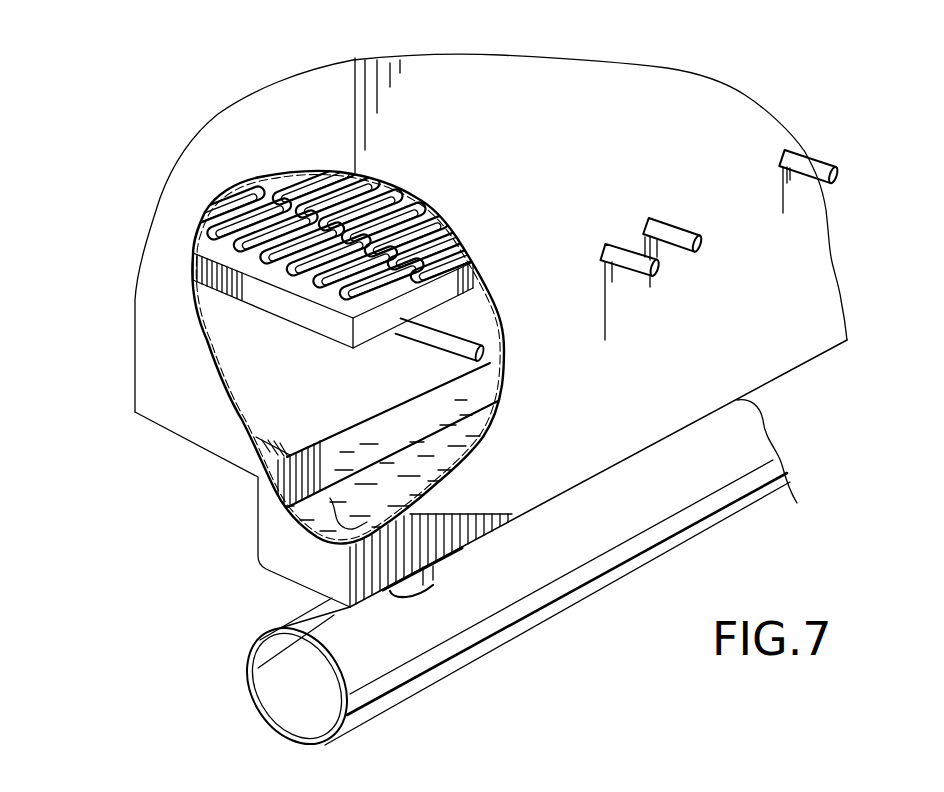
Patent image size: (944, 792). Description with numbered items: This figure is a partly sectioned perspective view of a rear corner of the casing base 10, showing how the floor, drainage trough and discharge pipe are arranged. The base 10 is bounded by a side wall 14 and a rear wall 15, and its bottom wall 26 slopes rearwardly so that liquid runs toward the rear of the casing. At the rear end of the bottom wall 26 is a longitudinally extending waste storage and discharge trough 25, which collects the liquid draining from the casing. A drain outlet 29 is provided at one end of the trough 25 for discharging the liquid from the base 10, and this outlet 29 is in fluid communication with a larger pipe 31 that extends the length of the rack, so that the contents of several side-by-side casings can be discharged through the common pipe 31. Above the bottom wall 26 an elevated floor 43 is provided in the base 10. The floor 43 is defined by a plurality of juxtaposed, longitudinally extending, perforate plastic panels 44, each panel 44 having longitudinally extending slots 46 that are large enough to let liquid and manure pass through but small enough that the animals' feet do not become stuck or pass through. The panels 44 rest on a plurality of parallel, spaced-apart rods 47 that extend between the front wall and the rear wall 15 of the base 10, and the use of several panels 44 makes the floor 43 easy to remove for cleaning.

The base 10 is at (849, 318).
The side wall 14 is at (294, 100).
The rear wall 15 is at (571, 126).
The waste storage and discharge trough 25 is at (268, 551).
The bottom wall 26 is at (346, 404).
The drain outlet 29 is at (413, 587).
The pipe 31 is at (703, 521).
The elevated floor 43 is at (267, 373).
The panel 44 is at (262, 298).
The slots 46 is at (277, 197).
The rods 47 is at (782, 150).